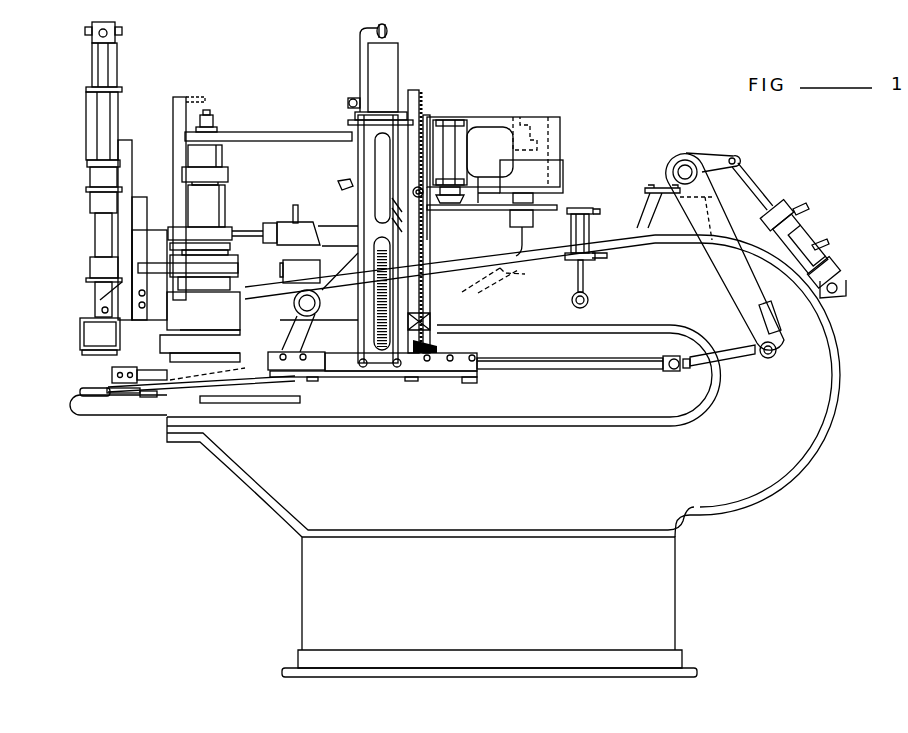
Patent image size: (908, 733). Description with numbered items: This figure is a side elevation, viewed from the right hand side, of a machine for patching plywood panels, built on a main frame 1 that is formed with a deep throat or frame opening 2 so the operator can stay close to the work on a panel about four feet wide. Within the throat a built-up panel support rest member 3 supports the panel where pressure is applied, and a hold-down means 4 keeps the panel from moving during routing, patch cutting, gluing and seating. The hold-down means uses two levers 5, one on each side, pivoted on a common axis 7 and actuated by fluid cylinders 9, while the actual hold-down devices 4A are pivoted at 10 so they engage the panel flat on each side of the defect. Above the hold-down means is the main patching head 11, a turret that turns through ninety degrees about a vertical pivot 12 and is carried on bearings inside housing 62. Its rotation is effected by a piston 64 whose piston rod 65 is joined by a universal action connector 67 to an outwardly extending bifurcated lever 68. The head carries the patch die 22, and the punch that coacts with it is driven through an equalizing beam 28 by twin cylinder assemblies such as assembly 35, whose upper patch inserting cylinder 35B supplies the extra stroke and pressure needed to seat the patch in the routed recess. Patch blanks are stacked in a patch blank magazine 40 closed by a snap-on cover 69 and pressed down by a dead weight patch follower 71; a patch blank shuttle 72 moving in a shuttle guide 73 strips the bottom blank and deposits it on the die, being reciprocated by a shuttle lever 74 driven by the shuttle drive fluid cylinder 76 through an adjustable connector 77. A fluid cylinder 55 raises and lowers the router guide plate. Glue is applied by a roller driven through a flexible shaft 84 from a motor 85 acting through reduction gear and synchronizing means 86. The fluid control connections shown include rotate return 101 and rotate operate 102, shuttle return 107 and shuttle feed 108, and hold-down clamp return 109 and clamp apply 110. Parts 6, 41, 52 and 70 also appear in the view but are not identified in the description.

The main frame 1 is at (240, 483).
The throat or frame opening 2 is at (645, 410).
The panel support rest member 3 is at (94, 408).
The hold-down means 4 is at (131, 412).
The hold-down devices 4A is at (80, 392).
The levers 5 is at (247, 378).
The plate 6 is at (146, 398).
The common axis 7 is at (293, 308).
The fluid cylinders 9 is at (598, 234).
The pivot 10 is at (115, 413).
The main patching head 11 is at (75, 232).
The vertical pivot 12 is at (222, 108).
The patch die 22 is at (82, 337).
The equalizing beam 28 is at (100, 36).
The cylinder assembly 35 is at (102, 242).
The patch inserting cylinder 35B is at (100, 130).
The patch blank magazine 40 is at (351, 165).
The link 41 is at (280, 403).
The clamp 52 is at (112, 376).
The fluid cylinder 55 is at (180, 113).
The housing 62 is at (217, 297).
The piston 64 is at (330, 231).
The piston rod 65 is at (247, 232).
The universal action connector 67 is at (173, 230).
The bifurcated lever 68 is at (204, 228).
The snap-on cover 69 is at (368, 252).
The rack 70 is at (424, 100).
The dead weight patch follower 71 is at (377, 71).
The patch blank shuttle 72 is at (588, 370).
The shuttle guide 73 is at (355, 383).
The shuttle lever 74 is at (742, 288).
The shuttle drive fluid cylinder 76 is at (815, 236).
The adjustable connector 77 is at (740, 356).
The flexible shaft 84 is at (450, 267).
The motor 85 is at (462, 127).
The reduction gear and synchronizing means 86 is at (560, 196).
The rotate return control 101 is at (294, 206).
The rotate operate control 102 is at (340, 183).
The feed patch blank return control 107 is at (836, 250).
The feed patch blank control 108 is at (800, 205).
The hold down panel clamp return control 109 is at (596, 216).
The hold down panel clamp control 110 is at (600, 253).